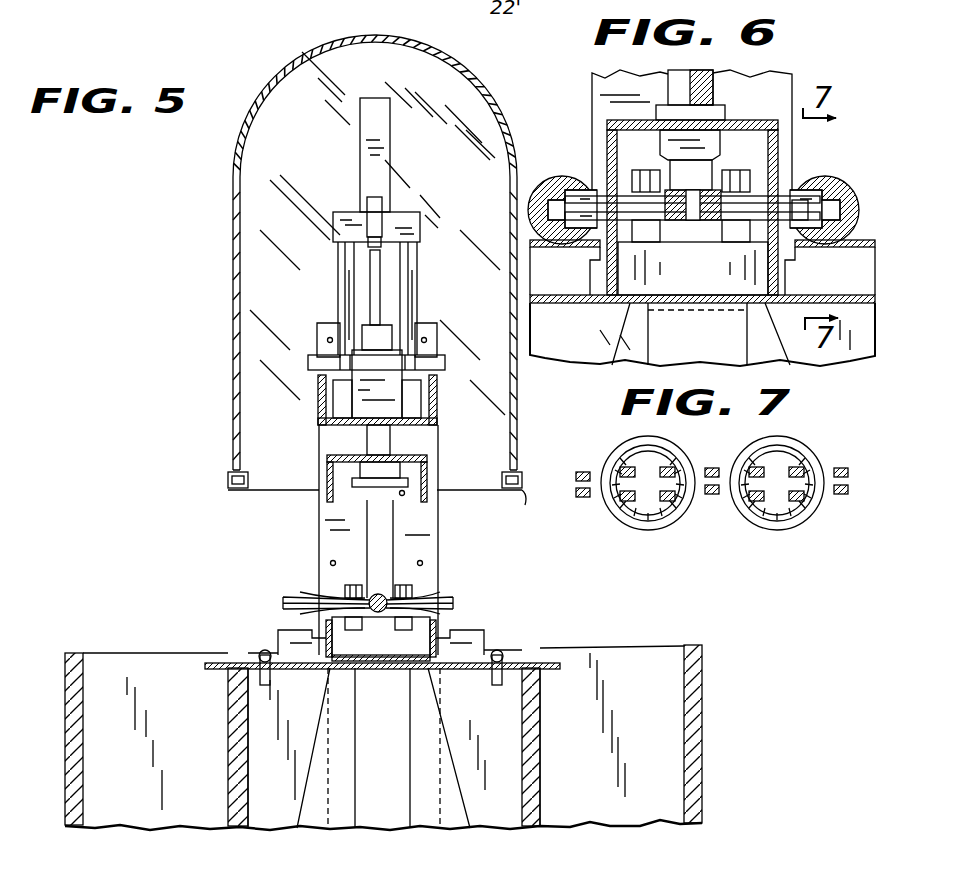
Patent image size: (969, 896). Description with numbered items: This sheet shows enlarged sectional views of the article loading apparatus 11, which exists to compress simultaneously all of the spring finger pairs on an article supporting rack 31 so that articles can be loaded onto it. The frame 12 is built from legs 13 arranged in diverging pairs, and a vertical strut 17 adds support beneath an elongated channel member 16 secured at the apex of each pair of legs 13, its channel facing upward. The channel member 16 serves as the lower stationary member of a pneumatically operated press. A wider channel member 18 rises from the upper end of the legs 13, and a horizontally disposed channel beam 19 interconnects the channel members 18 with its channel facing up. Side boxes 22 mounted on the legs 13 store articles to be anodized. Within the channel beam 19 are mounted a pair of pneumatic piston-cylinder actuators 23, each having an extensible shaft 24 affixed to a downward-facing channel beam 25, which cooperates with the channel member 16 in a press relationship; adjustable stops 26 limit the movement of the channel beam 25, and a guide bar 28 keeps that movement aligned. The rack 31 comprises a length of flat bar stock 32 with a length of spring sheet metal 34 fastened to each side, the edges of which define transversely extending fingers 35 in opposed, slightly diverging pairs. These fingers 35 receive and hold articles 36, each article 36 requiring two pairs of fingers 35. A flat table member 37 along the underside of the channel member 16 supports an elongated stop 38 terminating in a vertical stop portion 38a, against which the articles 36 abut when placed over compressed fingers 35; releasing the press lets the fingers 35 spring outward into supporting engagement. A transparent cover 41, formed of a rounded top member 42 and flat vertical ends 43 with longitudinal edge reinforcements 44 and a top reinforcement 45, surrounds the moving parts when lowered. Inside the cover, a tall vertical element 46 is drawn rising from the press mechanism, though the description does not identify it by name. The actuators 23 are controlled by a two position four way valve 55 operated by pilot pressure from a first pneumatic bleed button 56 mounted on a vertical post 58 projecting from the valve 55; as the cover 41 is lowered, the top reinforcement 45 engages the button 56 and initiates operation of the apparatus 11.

In FIG. 5, the article loading apparatus 11 is at (165, 200).
In FIG. 5, the frame 12 is at (462, 806).
In FIG. 5, the legs 13 is at (328, 815).
In FIG. 6, the legs 13 is at (625, 350).
In FIG. 5, the channel member 16 is at (385, 668).
In FIG. 6, the channel member 16 is at (706, 306).
In FIG. 5, the vertical strut 17 is at (390, 815).
In FIG. 6, the vertical strut 17 is at (718, 360).
In FIG. 5, the channel member 18 is at (320, 536).
In FIG. 6, the channel member 18 is at (793, 78).
In FIG. 5, the channel beam 19 is at (318, 402).
In FIG. 5, the side boxes 22 is at (70, 653).
In FIG. 6, the side boxes 22 is at (575, 362).
In FIG. 5, the pneumatic piston-cylinder actuators 23 is at (418, 258).
In FIG. 5, the extensible shaft 24 is at (367, 440).
In FIG. 6, the extensible shaft 24 is at (712, 78).
In FIG. 5, the channel beam 25 is at (330, 472).
In FIG. 6, the channel beam 25 is at (706, 140).
In FIG. 5, the adjustable stops 26 is at (355, 586).
In FIG. 6, the adjustable stops 26 is at (650, 172).
In FIG. 5, the guide bar 28 is at (388, 524).
In FIG. 6, the guide bar 28 is at (712, 165).
In FIG. 6, the article supporting rack 31 is at (802, 205).
In FIG. 5, the flat bar stock 32 is at (390, 612).
In FIG. 6, the flat bar stock 32 is at (718, 222).
In FIG. 5, the spring sheet metal 34 is at (378, 595).
In FIG. 5, the fingers 35 is at (300, 604).
In FIG. 6, the fingers 35 is at (580, 205).
In FIG. 7, the fingers 35 is at (662, 468).
In FIG. 6, the articles 36 is at (545, 185).
In FIG. 7, the articles 36 is at (670, 528).
In FIG. 5, the table member 37 is at (278, 636).
In FIG. 6, the table member 37 is at (702, 270).
In FIG. 5, the stop 38 is at (295, 629).
In FIG. 6, the stop 38 is at (598, 260).
In FIG. 5, the vertical stop portion 38a is at (318, 640).
In FIG. 6, the vertical stop portion 38a is at (578, 270).
In FIG. 5, the transparent cover 41 is at (230, 303).
In FIG. 5, the rounded top member 42 is at (240, 278).
In FIG. 5, the flat vertical ends 43 is at (258, 240).
In FIG. 5, the longitudinal edge reinforcements 44 is at (230, 490).
In FIG. 5, the top reinforcement 45 is at (371, 42).
In FIG. 5, the vertical column 46 is at (382, 153).
In FIG. 5, the two position four way valve 55 is at (404, 388).
In FIG. 5, the first pneumatic bleed button 56 is at (384, 200).
In FIG. 5, the vertical post 58 is at (381, 297).